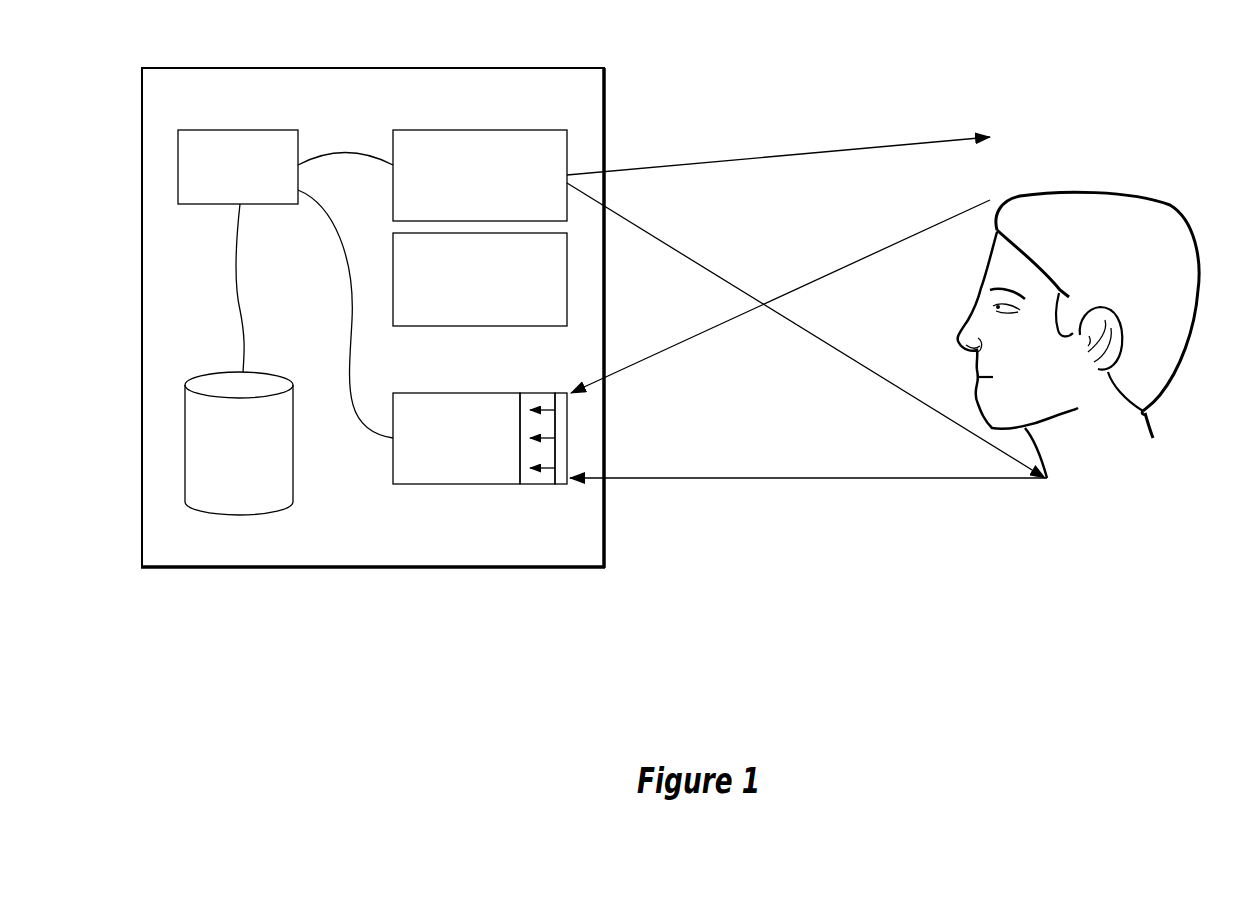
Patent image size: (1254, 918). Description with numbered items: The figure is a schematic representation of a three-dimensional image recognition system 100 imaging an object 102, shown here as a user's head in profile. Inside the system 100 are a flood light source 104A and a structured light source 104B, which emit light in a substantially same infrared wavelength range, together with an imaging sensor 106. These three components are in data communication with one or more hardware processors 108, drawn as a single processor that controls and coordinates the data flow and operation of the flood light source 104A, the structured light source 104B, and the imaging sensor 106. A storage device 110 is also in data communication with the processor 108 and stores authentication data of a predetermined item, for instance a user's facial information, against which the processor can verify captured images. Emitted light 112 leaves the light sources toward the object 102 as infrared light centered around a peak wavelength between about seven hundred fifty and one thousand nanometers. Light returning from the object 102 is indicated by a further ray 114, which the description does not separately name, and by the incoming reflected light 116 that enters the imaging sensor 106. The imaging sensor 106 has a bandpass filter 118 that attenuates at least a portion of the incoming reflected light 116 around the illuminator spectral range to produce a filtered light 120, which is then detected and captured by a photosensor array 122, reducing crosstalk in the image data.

The 3D image recognition system 100 is at (652, 95).
The object 102 is at (1078, 191).
The flood light source 104A is at (503, 203).
The structured light source 104B is at (503, 305).
The imaging sensor 106 is at (474, 451).
The hardware processor 108 is at (257, 179).
The storage device 110 is at (258, 441).
The emitted light 112 is at (760, 156).
The reflected light 114 is at (958, 298).
The incoming reflected light 116 is at (800, 481).
The bandpass filter 118 is at (559, 487).
The filtered light 120 is at (526, 470).
The photosensor array 122 is at (520, 396).